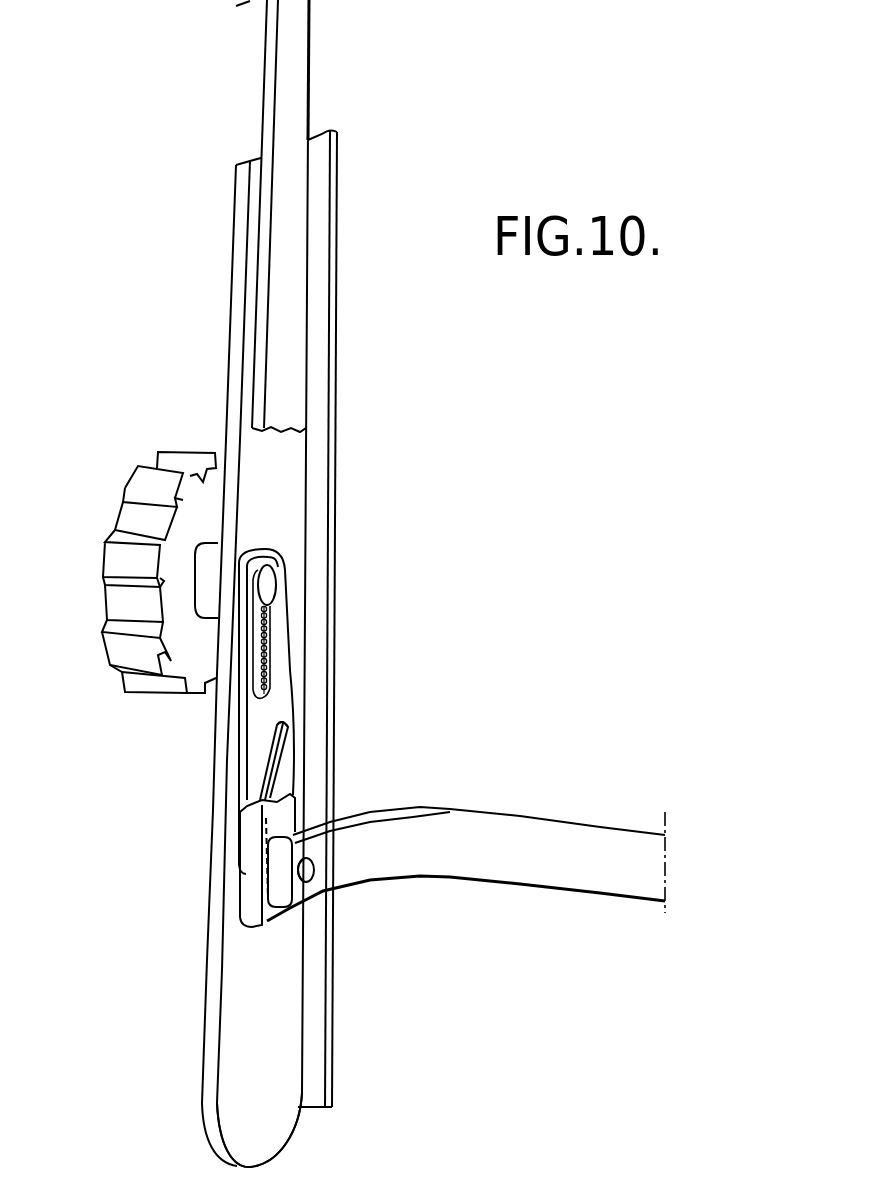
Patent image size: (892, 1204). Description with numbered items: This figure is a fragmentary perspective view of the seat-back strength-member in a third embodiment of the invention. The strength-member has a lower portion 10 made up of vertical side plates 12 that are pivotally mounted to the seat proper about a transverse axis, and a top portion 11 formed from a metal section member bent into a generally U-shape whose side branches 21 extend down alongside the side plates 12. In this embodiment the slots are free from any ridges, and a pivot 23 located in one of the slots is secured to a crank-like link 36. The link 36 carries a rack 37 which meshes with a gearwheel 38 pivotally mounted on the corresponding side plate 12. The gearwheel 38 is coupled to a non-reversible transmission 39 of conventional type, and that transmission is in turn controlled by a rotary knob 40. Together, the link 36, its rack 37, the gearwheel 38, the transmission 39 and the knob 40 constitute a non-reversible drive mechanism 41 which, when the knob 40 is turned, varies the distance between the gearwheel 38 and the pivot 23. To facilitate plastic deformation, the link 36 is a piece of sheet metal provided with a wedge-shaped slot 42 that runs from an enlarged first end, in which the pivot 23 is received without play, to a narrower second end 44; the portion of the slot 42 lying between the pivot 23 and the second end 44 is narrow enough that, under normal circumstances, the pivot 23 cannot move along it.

The lower portion of the seat-back strength-member 10 is at (344, 376).
The top portion of the seat-back strength-member 11 is at (256, 64).
The side branch 21 is at (292, 105).
The side plate 12 is at (258, 1095).
The pivot 23 is at (313, 873).
The crank-like link 36 is at (280, 713).
The rack 37 is at (267, 635).
The gearwheel 38 is at (265, 590).
The non-reversible transmission 39 is at (212, 588).
The rotary knob 40 is at (138, 522).
The non-reversible drive mechanism 41 is at (136, 701).
The wedge-shaped slot 42 is at (272, 767).
The second end of the slot 44 is at (288, 727).